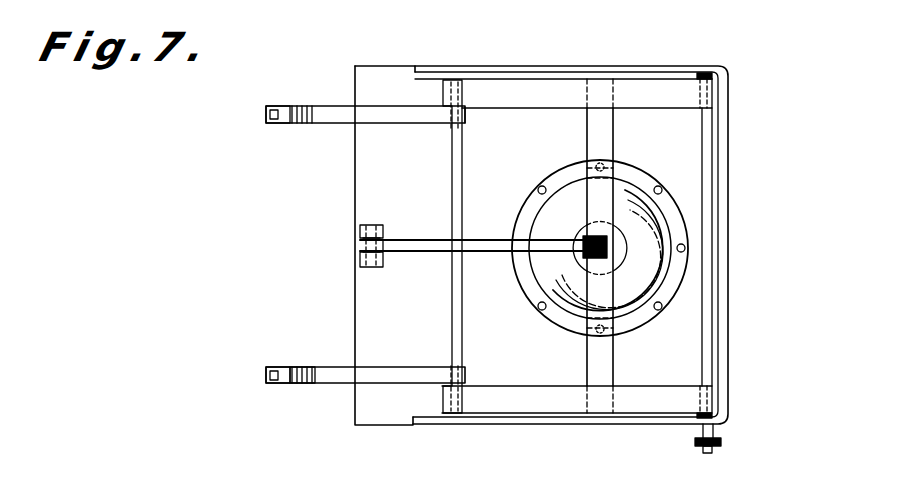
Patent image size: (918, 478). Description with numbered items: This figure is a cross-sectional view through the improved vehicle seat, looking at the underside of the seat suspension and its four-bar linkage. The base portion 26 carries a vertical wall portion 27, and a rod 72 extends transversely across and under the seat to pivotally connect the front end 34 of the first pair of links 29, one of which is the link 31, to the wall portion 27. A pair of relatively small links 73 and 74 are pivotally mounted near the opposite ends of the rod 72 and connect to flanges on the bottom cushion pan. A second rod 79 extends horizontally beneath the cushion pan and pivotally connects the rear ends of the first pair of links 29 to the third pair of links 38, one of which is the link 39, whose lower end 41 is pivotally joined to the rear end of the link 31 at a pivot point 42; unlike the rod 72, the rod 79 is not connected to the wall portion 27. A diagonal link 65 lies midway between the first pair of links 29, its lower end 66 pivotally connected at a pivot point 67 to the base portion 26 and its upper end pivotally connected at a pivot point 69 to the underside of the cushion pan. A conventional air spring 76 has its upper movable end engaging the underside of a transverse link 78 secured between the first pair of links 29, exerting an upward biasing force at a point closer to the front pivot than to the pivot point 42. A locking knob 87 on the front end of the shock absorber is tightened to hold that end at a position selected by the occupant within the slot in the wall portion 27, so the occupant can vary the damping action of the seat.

The base portion 26 is at (368, 420).
The vertical wall portion 27 is at (598, 40).
The first pair of links 29 is at (514, 106).
The link 31 is at (585, 390).
The front end 34 is at (658, 96).
The third pair of links 38 is at (266, 126).
The link 39 is at (310, 368).
The lower end 41 is at (376, 122).
The pivot point 42 is at (452, 104).
The diagonal link 65 is at (488, 252).
The lower end 66 is at (398, 253).
The pivot point 67 is at (372, 232).
The pivot point 69 is at (604, 237).
The rod 72 is at (706, 156).
The link 73 is at (722, 74).
The link 74 is at (728, 416).
The air spring 76 is at (556, 178).
The transverse link 78 is at (604, 143).
The rod 79 is at (452, 175).
The locking knob 87 is at (724, 443).